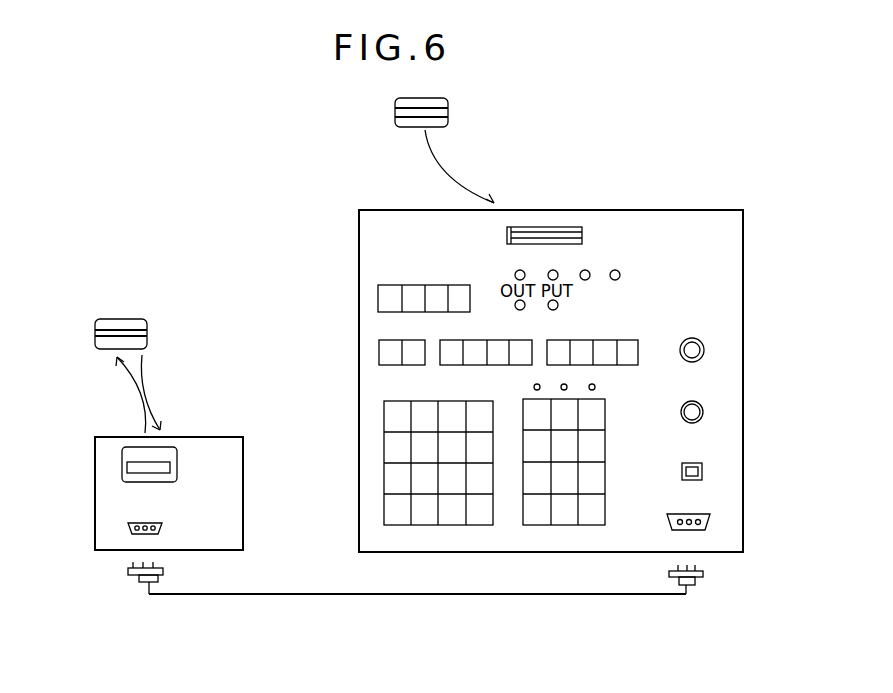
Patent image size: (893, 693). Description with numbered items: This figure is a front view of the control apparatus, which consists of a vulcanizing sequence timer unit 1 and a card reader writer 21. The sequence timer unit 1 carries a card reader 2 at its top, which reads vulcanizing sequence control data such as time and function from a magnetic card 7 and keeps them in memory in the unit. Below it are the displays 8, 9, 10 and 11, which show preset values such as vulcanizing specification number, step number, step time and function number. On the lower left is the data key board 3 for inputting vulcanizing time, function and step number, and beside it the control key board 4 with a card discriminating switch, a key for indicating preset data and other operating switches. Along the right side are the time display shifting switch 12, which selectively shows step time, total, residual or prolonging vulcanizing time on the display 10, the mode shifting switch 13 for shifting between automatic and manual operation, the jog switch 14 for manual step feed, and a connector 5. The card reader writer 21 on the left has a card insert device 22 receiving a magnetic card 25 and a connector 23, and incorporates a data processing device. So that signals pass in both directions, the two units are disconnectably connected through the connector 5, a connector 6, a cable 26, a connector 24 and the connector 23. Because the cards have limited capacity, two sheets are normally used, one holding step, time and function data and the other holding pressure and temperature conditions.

The vulcanizing sequence timer unit 1 is at (623, 210).
The card reader 2 is at (582, 230).
The data key board 3 is at (400, 401).
The control key board 4 is at (605, 403).
The connector 5 is at (710, 522).
The connector 6 is at (703, 578).
The magnetic card 7 is at (398, 100).
The display 8 is at (468, 285).
The display 9 is at (386, 352).
The display 10 is at (500, 360).
The display 11 is at (639, 346).
The time display shifting switch 12 is at (704, 348).
The mode shifting switch 13 is at (703, 410).
The jog switch 14 is at (702, 470).
The card reader writer 21 is at (222, 437).
The card insert device 22 is at (177, 468).
The connector 23 is at (162, 528).
The connector 24 is at (163, 575).
The magnetic card 25 is at (113, 322).
The cable 26 is at (381, 596).